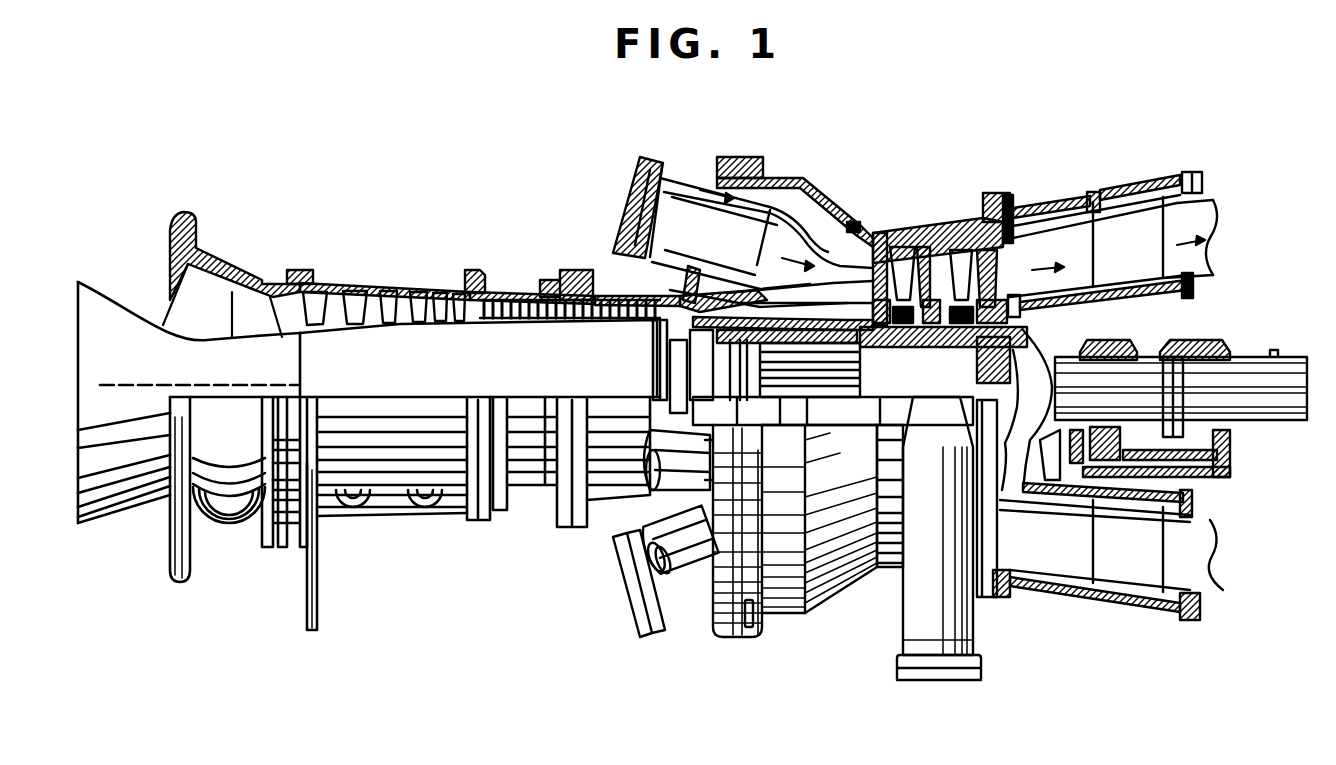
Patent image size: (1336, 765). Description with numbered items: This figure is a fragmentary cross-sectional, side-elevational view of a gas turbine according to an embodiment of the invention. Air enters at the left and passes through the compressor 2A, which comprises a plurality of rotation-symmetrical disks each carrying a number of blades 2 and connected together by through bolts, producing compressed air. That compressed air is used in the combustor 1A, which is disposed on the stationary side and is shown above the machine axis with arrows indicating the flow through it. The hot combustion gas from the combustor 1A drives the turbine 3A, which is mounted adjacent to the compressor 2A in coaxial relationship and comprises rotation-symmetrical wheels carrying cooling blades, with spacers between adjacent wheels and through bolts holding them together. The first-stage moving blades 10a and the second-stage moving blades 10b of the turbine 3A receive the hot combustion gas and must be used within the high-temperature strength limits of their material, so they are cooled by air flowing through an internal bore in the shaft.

The combustor 1A is at (683, 200).
The blades 2 is at (414, 288).
The compressor 2A is at (380, 283).
The turbine 3A is at (917, 222).
The first-stage moving blades 10a is at (875, 228).
The second-stage moving blades 10b is at (958, 222).